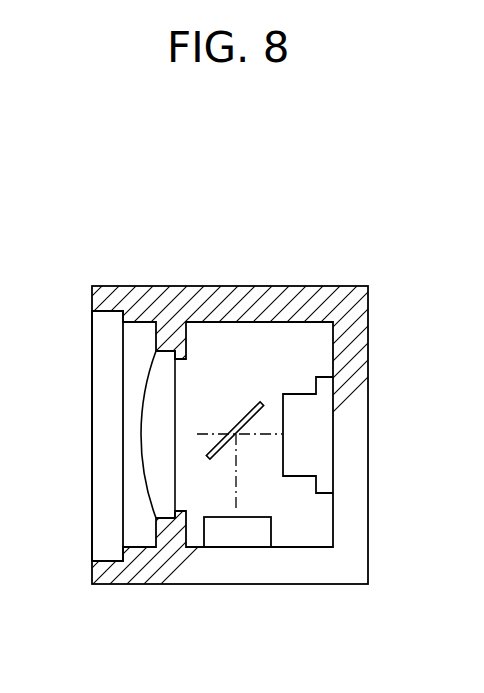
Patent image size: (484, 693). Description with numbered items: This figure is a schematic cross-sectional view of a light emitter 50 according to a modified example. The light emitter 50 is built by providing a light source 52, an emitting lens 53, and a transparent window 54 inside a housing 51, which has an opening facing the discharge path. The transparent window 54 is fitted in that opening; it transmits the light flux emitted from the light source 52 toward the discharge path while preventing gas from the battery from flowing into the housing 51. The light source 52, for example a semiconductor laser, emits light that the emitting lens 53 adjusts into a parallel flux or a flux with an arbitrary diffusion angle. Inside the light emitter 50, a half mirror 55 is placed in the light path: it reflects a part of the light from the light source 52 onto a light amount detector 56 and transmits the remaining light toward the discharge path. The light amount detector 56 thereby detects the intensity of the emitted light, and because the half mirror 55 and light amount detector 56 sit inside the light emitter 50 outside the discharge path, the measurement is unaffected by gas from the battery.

The light emitter 50 is at (317, 269).
The housing 51 is at (370, 343).
The light source 52 is at (323, 437).
The emitting lens 53 is at (163, 363).
The transparent window 54 is at (102, 343).
The half mirror 55 is at (243, 413).
The light amount detector 56 is at (233, 536).